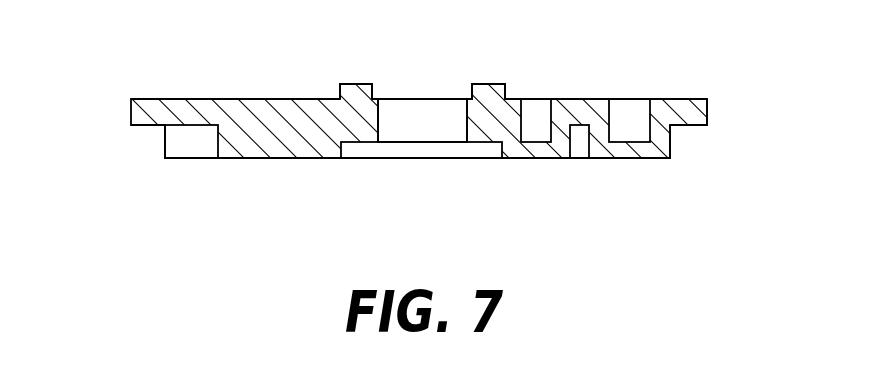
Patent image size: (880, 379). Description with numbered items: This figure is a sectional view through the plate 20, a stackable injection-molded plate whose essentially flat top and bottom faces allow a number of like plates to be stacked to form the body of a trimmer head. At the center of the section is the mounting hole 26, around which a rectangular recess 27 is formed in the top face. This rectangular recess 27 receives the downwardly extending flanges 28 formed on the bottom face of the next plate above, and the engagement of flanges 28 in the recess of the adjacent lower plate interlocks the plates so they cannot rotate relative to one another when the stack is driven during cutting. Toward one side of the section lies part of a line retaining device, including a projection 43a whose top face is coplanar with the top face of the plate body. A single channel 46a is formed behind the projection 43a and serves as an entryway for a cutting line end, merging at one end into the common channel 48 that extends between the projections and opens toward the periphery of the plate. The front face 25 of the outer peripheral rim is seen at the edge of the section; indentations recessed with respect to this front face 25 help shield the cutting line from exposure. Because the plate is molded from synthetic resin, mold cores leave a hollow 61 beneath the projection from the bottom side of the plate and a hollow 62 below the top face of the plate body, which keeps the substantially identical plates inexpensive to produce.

The plate 20 is at (149, 96).
The front face 25 is at (707, 117).
The center mounting hole 26 is at (437, 133).
The rectangular recess 27 is at (270, 98).
The flanges 28 is at (470, 95).
The projection 43a is at (672, 147).
The single channel 46a is at (582, 155).
The common channel 48 is at (197, 150).
The hollow 61 is at (632, 115).
The hollow 62 is at (532, 107).